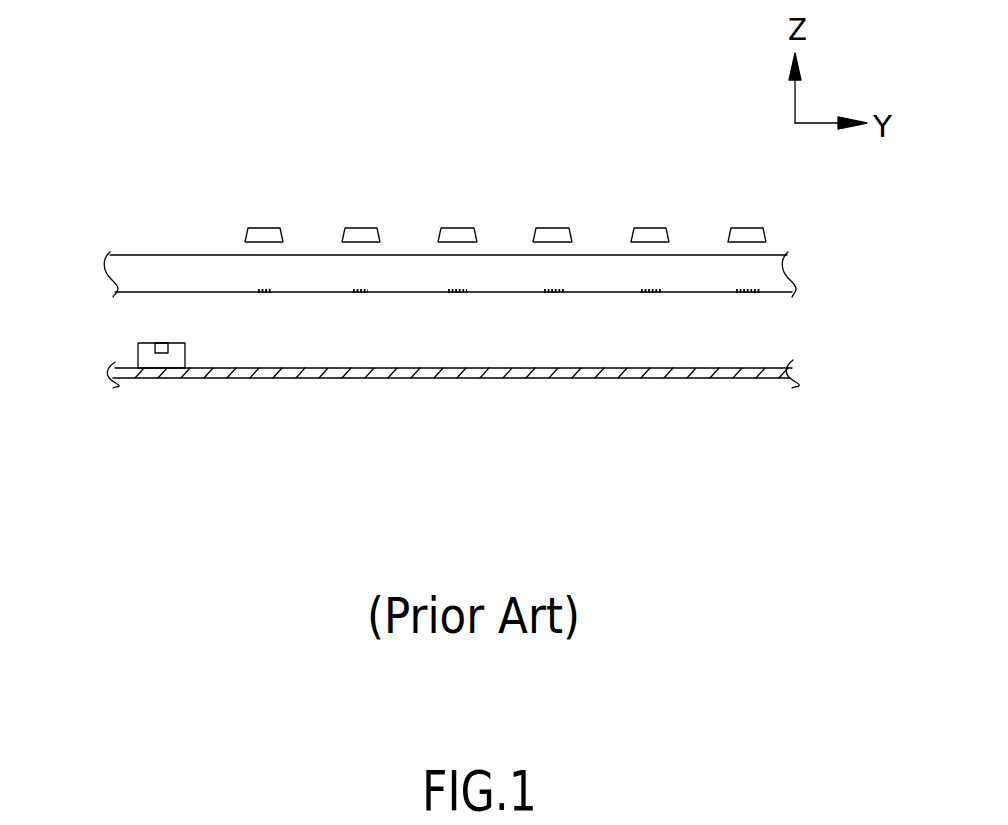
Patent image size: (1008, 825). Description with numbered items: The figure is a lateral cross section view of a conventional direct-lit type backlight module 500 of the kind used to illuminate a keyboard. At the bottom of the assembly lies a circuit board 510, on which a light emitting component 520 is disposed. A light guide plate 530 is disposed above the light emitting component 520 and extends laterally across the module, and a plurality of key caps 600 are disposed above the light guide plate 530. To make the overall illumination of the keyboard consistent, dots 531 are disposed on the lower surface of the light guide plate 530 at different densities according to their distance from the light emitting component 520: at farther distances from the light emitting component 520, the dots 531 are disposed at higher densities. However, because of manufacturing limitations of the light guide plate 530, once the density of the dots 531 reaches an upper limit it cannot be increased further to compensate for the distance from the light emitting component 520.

The backlight module 500 is at (127, 245).
The circuit board 510 is at (402, 372).
The light emitting component 520 is at (153, 347).
The light guide plate 530 is at (783, 267).
The dots 531 is at (358, 296).
The key caps 600 is at (267, 228).